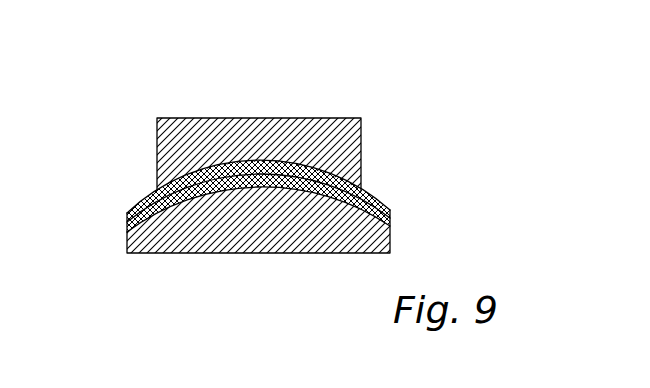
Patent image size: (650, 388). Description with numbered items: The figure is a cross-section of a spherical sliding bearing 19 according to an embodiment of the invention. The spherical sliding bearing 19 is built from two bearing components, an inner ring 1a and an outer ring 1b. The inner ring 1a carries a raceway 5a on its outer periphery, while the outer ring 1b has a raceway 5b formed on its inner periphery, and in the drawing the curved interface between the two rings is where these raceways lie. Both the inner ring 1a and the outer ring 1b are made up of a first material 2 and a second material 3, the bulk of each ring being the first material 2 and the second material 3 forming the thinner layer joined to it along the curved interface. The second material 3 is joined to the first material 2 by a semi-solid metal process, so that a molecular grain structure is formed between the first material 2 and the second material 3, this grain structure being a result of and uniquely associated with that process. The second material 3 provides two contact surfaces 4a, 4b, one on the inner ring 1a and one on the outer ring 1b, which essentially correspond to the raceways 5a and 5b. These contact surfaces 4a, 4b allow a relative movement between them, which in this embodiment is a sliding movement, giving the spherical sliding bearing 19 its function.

The spherical sliding bearing 19 is at (411, 118).
The inner ring 1a is at (365, 251).
The outer ring 1b is at (293, 122).
The first material 2 is at (215, 137).
The second material 3 is at (158, 165).
The contact surface 4a is at (388, 203).
The contact surface 4b is at (374, 198).
The raceway 5a is at (392, 207).
The raceway 5b is at (358, 172).